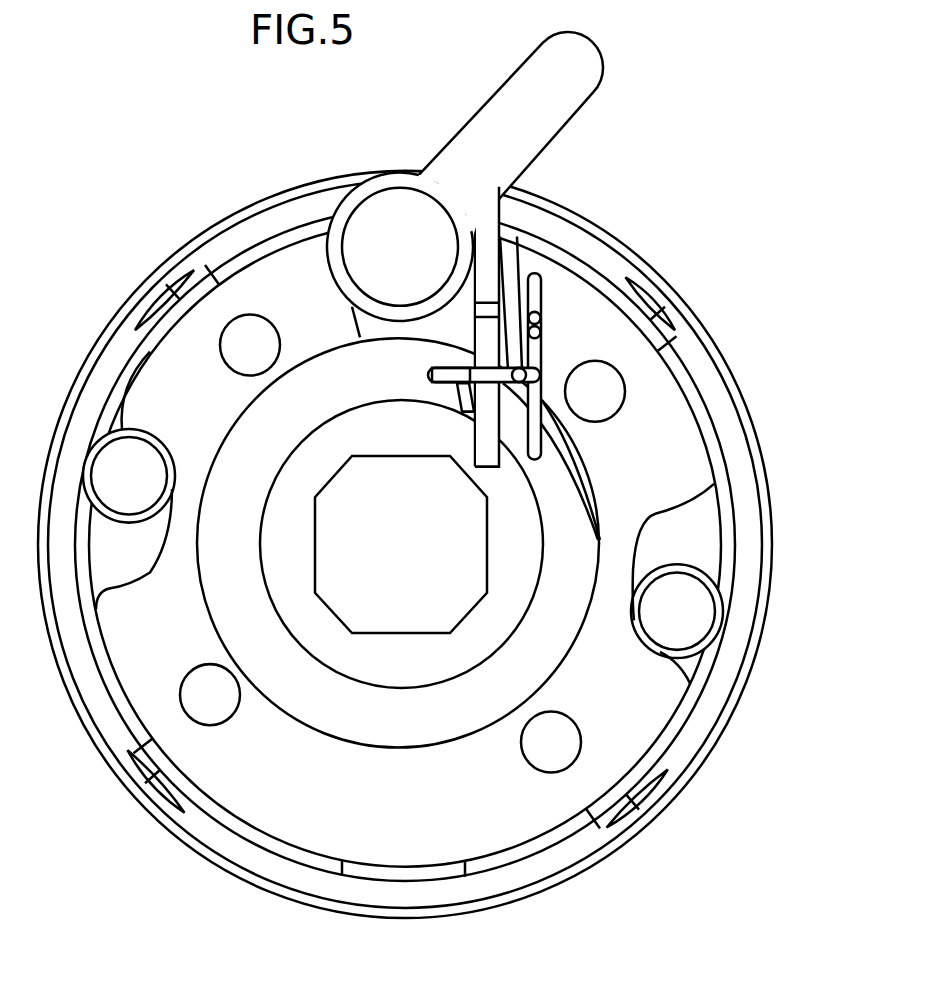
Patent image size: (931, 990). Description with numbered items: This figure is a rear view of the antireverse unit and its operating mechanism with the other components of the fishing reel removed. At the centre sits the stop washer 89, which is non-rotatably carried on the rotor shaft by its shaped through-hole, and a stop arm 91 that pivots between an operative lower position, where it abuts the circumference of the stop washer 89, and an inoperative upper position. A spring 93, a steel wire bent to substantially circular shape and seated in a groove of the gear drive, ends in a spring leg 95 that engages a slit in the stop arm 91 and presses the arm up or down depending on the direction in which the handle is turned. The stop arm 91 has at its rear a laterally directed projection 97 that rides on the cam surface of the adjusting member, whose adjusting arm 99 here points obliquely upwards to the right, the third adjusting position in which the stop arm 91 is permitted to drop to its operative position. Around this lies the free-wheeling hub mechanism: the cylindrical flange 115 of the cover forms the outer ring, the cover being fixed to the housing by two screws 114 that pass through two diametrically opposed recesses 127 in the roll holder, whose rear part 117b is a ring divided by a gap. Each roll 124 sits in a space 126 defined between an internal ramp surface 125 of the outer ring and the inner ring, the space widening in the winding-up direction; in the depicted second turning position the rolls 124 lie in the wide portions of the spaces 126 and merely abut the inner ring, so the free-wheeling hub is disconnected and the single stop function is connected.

The stop washer 89 is at (404, 740).
The stop arm 91 is at (483, 235).
The spring 93 is at (540, 300).
The spring leg 95 is at (460, 374).
The projection 97 is at (386, 180).
The adjusting arm 99 is at (523, 100).
The screws 114 is at (130, 470).
The cylindrical flange 115 is at (745, 612).
The rear part 117b is at (668, 437).
The roll 124 is at (210, 280).
The internal ramp surface 125 is at (165, 290).
The space 126 is at (150, 312).
The recesses 127 is at (108, 590).